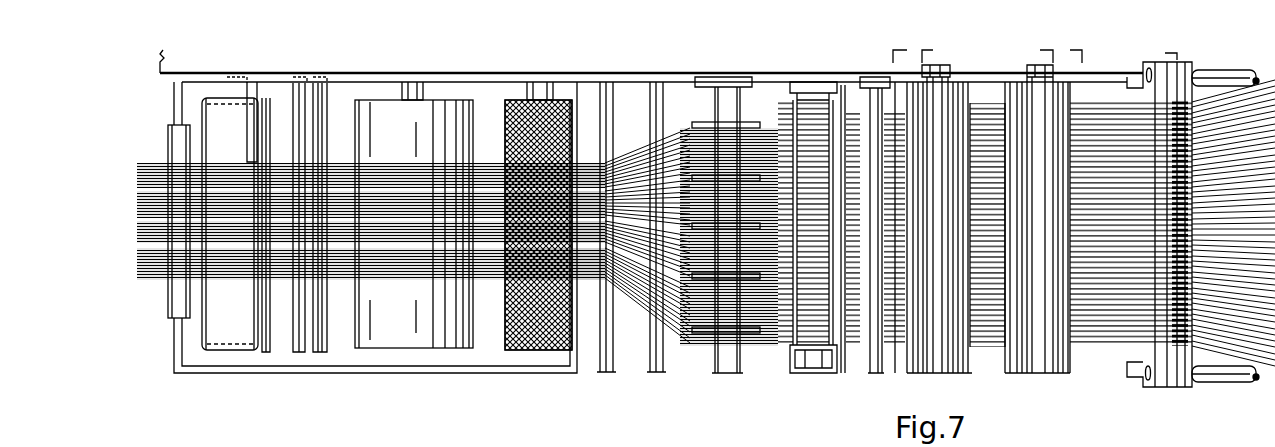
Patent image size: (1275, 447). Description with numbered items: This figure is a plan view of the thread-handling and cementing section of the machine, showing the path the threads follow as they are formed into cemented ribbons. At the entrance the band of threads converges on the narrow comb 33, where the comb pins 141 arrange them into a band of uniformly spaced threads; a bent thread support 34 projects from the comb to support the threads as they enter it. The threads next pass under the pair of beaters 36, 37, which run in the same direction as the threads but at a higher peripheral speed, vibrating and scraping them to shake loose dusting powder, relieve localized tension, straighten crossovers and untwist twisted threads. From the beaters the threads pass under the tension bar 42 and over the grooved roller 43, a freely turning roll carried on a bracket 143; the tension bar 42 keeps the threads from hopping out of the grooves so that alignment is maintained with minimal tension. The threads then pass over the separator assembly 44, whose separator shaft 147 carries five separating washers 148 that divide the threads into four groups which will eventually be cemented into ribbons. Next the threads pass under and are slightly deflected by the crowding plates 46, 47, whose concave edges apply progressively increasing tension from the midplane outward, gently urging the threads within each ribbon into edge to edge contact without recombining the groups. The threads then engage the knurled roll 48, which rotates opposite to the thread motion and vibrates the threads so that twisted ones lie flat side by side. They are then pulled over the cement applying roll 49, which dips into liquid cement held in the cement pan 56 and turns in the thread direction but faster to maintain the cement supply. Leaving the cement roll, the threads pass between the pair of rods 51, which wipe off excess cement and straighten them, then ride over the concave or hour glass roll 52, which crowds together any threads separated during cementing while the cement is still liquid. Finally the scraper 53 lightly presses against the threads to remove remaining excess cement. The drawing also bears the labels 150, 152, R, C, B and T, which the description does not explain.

The narrow comb 33 is at (1127, 385).
The bent thread support 34 is at (1252, 80).
The beater 36 is at (1052, 362).
The beater 37 is at (937, 372).
The tension bar 42 is at (874, 82).
The grooved roller 43 is at (820, 352).
The separator assembly 44 is at (729, 247).
The crowding plate 46 is at (656, 372).
The crowding plate 47 is at (605, 372).
The knurled roll 48 is at (540, 345).
The cement applying roll 49 is at (400, 340).
The rods 51 is at (318, 352).
The concave roll 52 is at (266, 352).
The scraper 53 is at (236, 352).
The cement pan 56 is at (478, 373).
The comb pins 141 is at (1178, 373).
The bracket 143 is at (792, 355).
The separator shaft 147 is at (726, 364).
The separating washers 148 is at (752, 178).
The lead 150 is at (579, 444).
The lead 152 is at (385, 444).
The wire ribbon R is at (146, 244).
The coil section C is at (388, 382).
The base section B is at (997, 390).
The terminal section T is at (1265, 372).